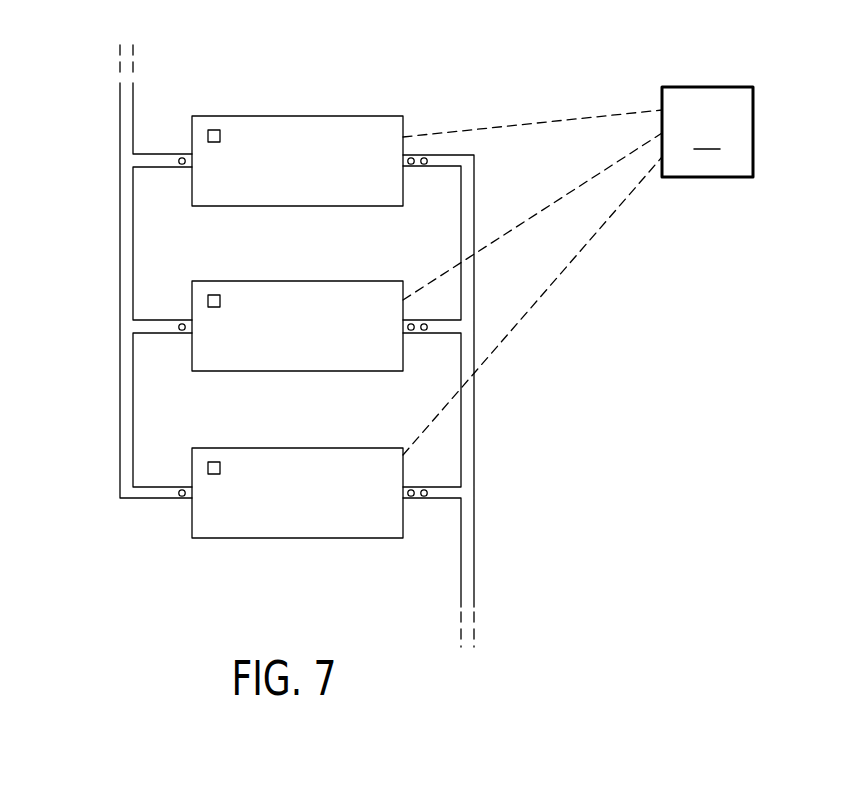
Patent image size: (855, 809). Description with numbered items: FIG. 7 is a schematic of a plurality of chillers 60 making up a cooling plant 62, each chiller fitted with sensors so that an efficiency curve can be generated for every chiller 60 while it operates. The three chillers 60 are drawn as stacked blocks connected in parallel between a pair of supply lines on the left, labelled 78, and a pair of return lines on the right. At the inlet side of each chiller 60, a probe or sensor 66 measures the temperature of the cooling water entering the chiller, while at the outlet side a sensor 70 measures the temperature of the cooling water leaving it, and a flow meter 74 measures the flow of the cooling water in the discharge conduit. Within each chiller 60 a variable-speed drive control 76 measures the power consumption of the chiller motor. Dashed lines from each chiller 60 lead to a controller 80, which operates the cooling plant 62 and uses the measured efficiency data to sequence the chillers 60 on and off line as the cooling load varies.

The chiller 60 is at (302, 95).
The plant 62 is at (520, 65).
The sensor 66 is at (178, 162).
The sensor 70 is at (412, 157).
The flow meter 74 is at (426, 164).
The variable-speed drive control 76 is at (221, 136).
The bus bar 78 is at (120, 258).
The controller 80 is at (707, 132).